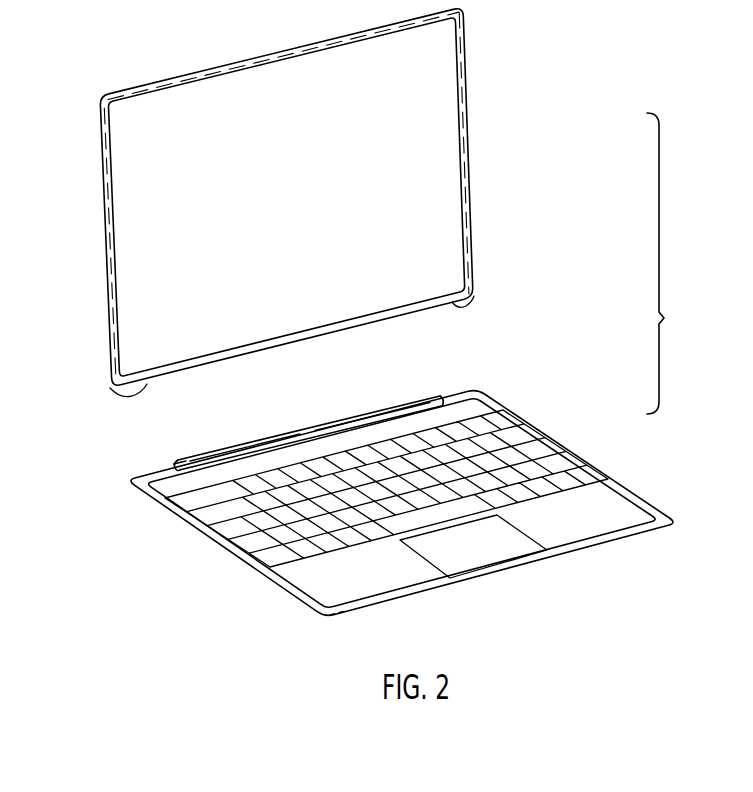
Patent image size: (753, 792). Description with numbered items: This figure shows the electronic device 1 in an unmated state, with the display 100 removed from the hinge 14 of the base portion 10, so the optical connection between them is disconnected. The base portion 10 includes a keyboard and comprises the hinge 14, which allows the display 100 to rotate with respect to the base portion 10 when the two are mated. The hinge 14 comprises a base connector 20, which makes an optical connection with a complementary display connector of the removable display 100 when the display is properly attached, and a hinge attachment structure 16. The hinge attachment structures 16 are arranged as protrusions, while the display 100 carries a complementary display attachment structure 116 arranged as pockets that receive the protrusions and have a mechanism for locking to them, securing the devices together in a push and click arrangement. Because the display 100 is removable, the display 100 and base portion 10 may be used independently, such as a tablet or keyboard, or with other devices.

The electronic device 1 is at (662, 263).
The base portion 10 is at (610, 468).
The hinge 14 is at (262, 441).
The hinge attachment structure 16 is at (178, 459).
The base connector 20 is at (327, 423).
The display 100 is at (478, 162).
The display attachment structure 116 is at (110, 388).